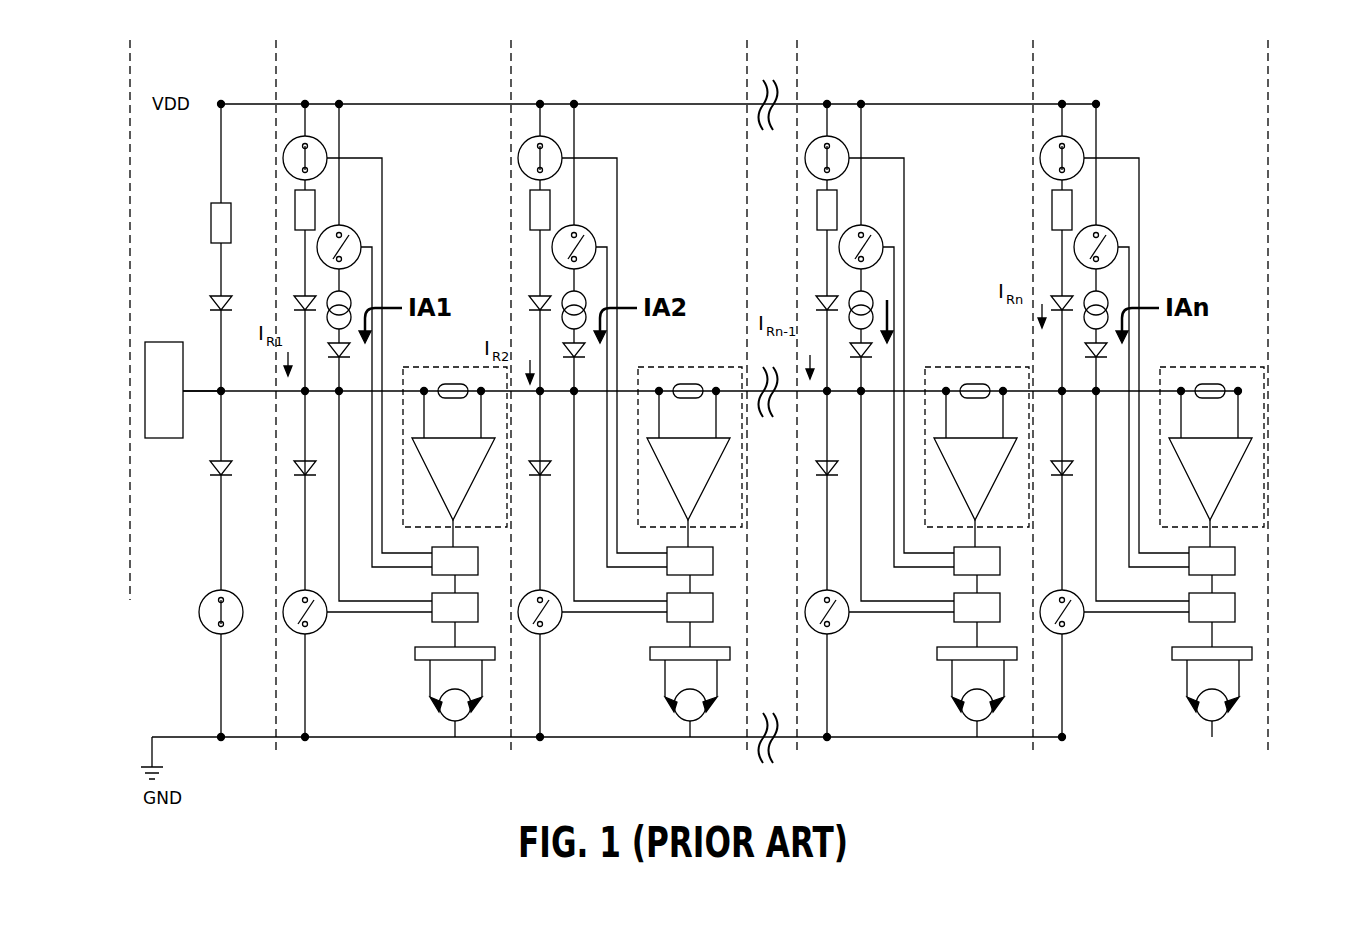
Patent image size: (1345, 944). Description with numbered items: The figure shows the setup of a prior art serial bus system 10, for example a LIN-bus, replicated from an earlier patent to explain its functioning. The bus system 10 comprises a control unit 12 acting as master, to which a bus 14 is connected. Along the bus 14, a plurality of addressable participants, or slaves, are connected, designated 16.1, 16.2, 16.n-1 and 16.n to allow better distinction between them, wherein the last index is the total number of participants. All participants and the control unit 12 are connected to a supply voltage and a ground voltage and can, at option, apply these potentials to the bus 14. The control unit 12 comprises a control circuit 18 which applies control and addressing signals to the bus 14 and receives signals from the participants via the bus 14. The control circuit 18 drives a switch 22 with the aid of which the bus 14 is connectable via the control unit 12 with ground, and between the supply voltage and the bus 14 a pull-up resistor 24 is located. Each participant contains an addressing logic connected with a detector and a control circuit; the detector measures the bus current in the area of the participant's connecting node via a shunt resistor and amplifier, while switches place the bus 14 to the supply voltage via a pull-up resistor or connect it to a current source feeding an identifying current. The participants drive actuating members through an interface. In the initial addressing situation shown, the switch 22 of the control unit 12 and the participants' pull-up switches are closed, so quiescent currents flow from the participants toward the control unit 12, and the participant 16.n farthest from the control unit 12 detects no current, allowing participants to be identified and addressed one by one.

The serial bus system 10 is at (1275, 212).
The control unit 12 is at (210, 72).
The bus 14 is at (200, 394).
The first participant 16.1 is at (428, 72).
The second participant 16.2 is at (655, 72).
The (n-1)th participant 16.n-1 is at (962, 72).
The nth participant 16.n is at (1180, 72).
The control circuit 18 is at (163, 360).
The switch 22 is at (205, 608).
The pull-up resistor 24 is at (208, 222).